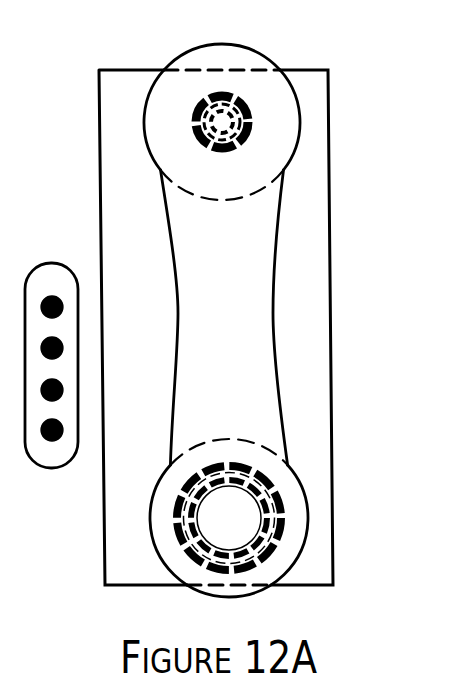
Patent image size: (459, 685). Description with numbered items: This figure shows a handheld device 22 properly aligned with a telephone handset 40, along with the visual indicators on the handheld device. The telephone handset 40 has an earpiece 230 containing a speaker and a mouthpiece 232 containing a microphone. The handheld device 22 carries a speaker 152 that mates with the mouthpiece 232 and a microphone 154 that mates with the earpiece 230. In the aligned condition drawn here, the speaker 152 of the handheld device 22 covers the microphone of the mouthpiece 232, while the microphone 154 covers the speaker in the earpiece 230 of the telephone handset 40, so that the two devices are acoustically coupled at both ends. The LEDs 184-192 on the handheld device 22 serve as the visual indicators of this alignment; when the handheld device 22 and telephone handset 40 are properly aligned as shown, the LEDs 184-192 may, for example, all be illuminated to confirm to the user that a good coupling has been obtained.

The handheld device 22 is at (331, 322).
The telephone handset 40 is at (244, 331).
The speaker 152 is at (280, 545).
The microphone 154 is at (247, 100).
The earpiece 230 is at (190, 110).
The mouthpiece 232 is at (177, 535).
The LEDs 184-192 is at (78, 335).